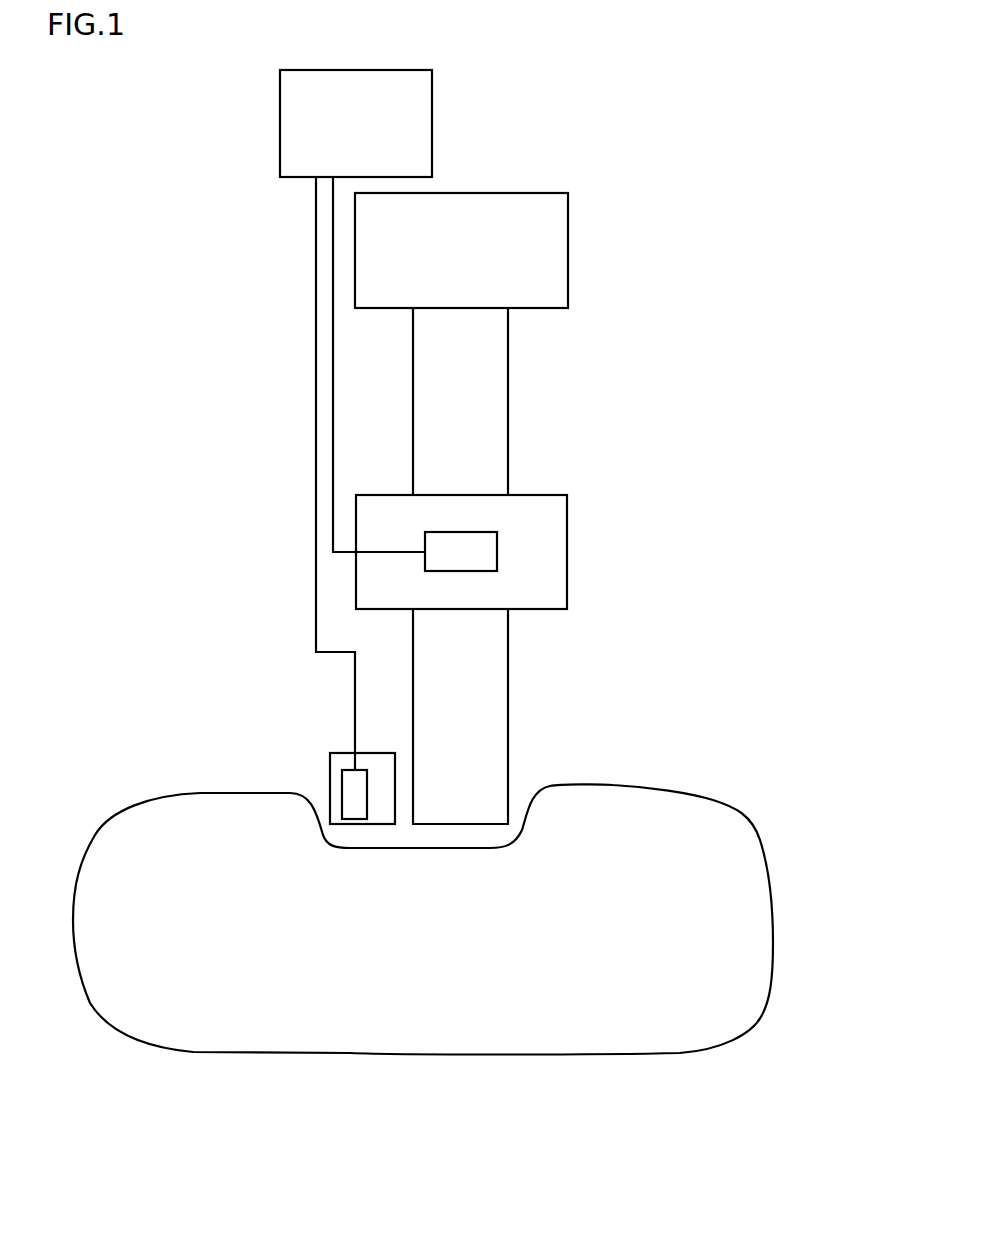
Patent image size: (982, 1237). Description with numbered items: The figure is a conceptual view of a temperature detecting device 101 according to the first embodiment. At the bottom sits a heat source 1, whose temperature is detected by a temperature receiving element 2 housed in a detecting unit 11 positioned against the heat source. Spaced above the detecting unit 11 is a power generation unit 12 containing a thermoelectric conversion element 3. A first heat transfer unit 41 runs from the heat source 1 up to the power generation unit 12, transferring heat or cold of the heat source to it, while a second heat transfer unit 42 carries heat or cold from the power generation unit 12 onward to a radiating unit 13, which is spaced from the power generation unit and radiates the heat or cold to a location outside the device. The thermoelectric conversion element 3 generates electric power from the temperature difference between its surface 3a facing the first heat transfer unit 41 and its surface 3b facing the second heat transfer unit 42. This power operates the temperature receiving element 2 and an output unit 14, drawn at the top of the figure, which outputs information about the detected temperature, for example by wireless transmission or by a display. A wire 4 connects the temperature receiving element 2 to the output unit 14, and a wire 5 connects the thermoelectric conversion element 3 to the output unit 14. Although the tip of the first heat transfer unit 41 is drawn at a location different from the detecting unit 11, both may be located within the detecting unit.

The heat source 1 is at (773, 943).
The temperature receiving element 2 is at (341, 777).
The thermoelectric conversion element 3 is at (497, 552).
The surface 3a is at (467, 572).
The surface 3b is at (467, 531).
The wire 4 is at (315, 456).
The wire 5 is at (331, 360).
The detecting unit 11 is at (329, 792).
The power generation unit 12 is at (567, 570).
The radiating unit 13 is at (568, 250).
The output unit 14 is at (432, 120).
The first heat transfer unit 41 is at (508, 706).
The second heat transfer unit 42 is at (508, 410).
The temperature detecting device 101 is at (630, 107).